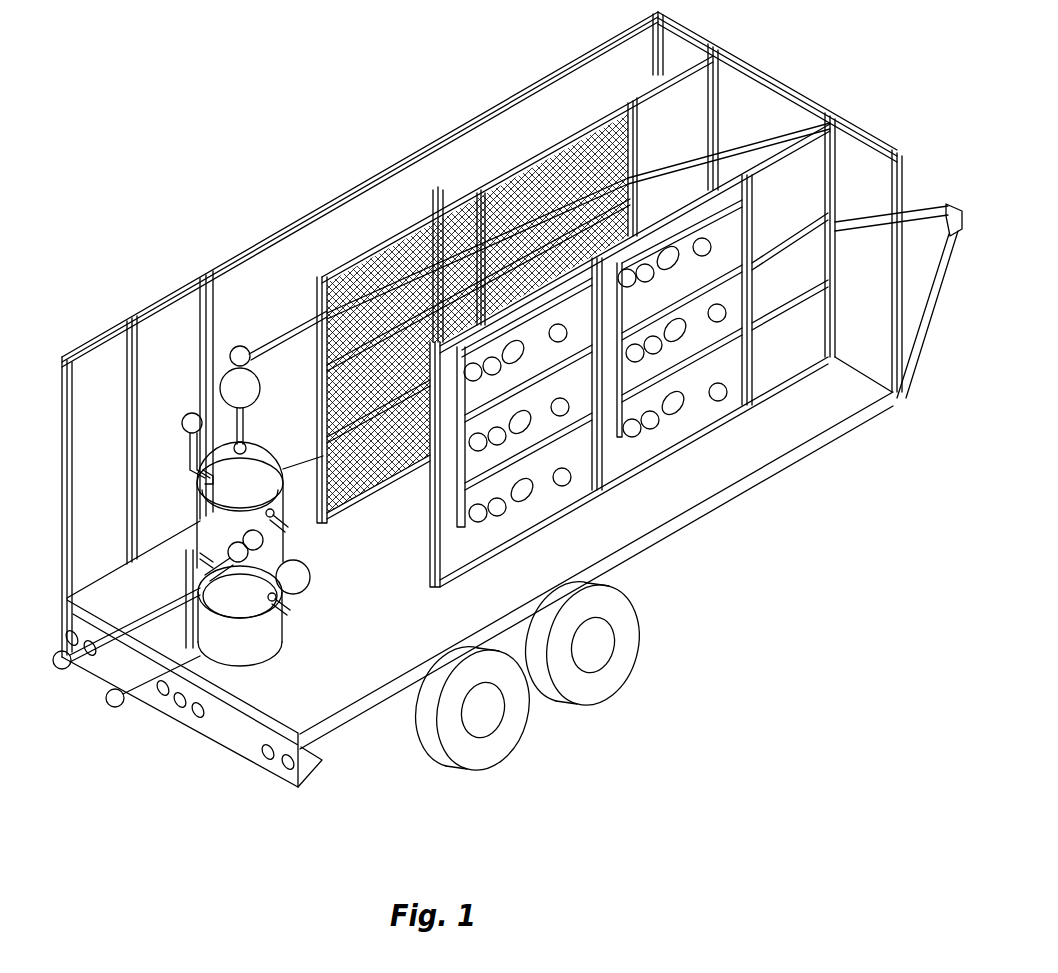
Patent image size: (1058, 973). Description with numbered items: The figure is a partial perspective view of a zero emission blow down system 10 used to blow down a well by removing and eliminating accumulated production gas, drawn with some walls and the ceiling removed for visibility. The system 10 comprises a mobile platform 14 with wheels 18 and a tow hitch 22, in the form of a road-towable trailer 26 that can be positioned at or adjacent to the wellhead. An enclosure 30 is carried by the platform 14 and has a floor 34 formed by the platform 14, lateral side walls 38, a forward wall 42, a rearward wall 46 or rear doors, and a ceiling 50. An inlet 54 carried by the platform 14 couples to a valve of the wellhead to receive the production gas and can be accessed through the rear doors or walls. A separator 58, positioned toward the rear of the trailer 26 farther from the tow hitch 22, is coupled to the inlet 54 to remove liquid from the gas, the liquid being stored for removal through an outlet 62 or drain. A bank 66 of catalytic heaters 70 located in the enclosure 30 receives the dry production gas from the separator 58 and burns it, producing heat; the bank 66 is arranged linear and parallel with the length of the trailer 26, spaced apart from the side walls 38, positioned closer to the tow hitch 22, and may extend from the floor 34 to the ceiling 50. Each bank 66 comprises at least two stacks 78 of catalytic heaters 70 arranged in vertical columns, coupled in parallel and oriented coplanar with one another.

The zero emission blow down system 10 is at (243, 200).
The mobile platform 14 is at (678, 538).
The wheels 18 is at (498, 738).
The tow hitch 22 is at (950, 204).
The trailer 26 is at (818, 450).
The enclosure 30 is at (535, 78).
The floor 34 is at (320, 690).
The lateral side walls 38 is at (320, 235).
The forward wall 42 is at (762, 90).
The rearward wall 46 is at (62, 397).
The ceiling 50 is at (490, 105).
The inlet 54 is at (118, 708).
The separator 58 is at (245, 597).
The outlet 62 is at (63, 670).
The bank of catalytic heaters 66 is at (385, 235).
The catalytic heaters 70 is at (480, 178).
The stacks of catalytic heaters 78 is at (705, 407).